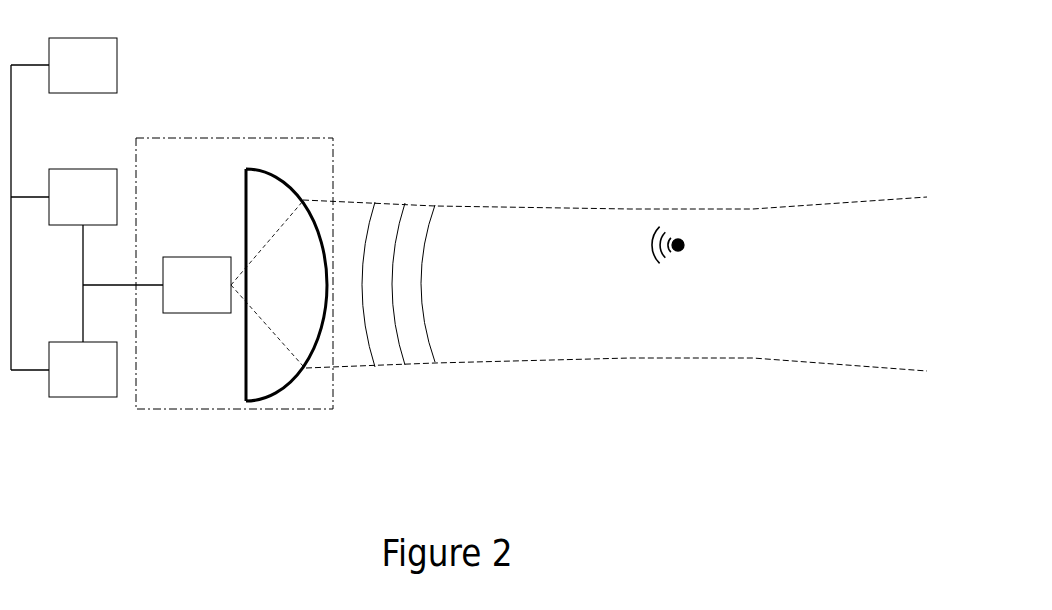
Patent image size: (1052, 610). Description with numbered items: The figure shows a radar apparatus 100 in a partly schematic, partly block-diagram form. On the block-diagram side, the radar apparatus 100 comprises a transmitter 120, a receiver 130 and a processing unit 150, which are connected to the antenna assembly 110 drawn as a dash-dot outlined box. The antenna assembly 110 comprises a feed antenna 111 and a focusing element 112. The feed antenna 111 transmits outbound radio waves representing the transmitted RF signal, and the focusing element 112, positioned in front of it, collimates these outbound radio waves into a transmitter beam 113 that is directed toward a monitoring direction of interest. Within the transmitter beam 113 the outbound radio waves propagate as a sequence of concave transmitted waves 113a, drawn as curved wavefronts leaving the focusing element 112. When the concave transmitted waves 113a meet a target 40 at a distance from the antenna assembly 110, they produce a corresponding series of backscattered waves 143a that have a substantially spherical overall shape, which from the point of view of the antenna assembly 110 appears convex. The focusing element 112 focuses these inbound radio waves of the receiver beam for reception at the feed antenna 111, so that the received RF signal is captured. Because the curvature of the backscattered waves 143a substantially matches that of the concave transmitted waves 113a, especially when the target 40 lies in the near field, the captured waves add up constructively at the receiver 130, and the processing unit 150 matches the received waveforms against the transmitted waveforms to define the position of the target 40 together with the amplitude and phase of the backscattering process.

The radar apparatus 100 is at (327, 34).
The antenna assembly 110 is at (205, 138).
The feed antenna 111 is at (193, 283).
The focusing element 112 is at (267, 382).
The transmitter beam 113 is at (800, 205).
The concave transmitted waves 113a is at (373, 193).
The transmitter 120 is at (64, 255).
The receiver 130 is at (64, 369).
The processing unit 150 is at (64, 204).
The backscattered waves 143a is at (647, 228).
The target 40 is at (684, 248).